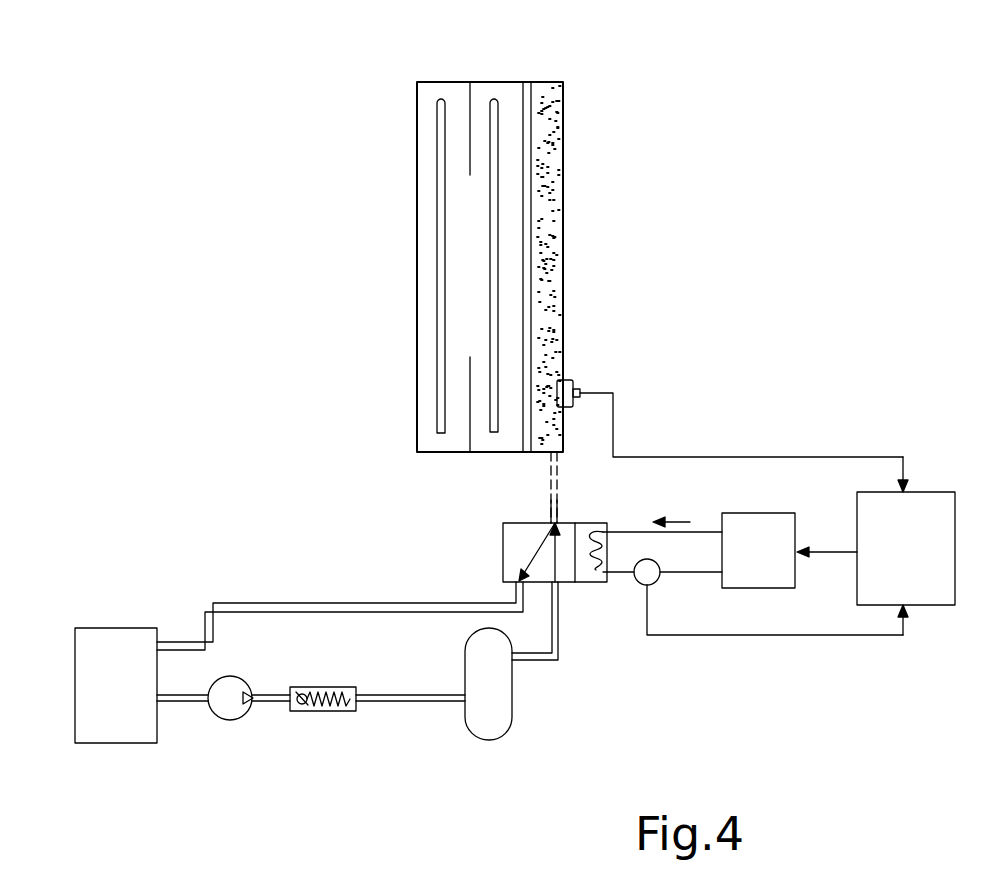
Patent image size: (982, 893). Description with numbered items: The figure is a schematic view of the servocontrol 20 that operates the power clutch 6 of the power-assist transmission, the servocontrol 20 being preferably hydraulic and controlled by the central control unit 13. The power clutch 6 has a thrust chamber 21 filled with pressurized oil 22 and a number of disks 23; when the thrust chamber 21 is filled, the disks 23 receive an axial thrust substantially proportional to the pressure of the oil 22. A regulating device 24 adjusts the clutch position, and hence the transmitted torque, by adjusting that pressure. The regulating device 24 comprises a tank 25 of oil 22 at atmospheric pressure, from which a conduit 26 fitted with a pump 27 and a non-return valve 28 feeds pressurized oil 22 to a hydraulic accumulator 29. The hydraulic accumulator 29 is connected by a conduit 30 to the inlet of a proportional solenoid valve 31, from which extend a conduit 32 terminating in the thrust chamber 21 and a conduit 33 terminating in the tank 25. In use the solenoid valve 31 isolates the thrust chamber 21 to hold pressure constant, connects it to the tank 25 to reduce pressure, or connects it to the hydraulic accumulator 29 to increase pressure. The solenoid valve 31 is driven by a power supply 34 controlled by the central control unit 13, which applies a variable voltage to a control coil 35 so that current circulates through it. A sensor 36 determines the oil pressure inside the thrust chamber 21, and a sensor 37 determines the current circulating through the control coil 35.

The power clutch 6 is at (543, 57).
The central control unit 13 is at (857, 565).
The servocontrol 20 is at (466, 462).
The thrust chamber 21 is at (560, 170).
The pressurized oil 22 is at (548, 100).
The disks 23 is at (498, 102).
The regulating device 24 is at (572, 501).
The tank 25 is at (75, 703).
The conduit 26 is at (183, 701).
The pump 27 is at (230, 720).
The non-return valve 28 is at (328, 713).
The hydraulic accumulator 29 is at (470, 726).
The conduit 30 is at (560, 618).
The proportional solenoid valve 31 is at (503, 560).
The conduit 32 is at (549, 512).
The conduit 33 is at (320, 604).
The power supply 34 is at (733, 587).
The control coil 35 is at (587, 528).
The sensor 36 is at (573, 382).
The sensor 37 is at (644, 584).